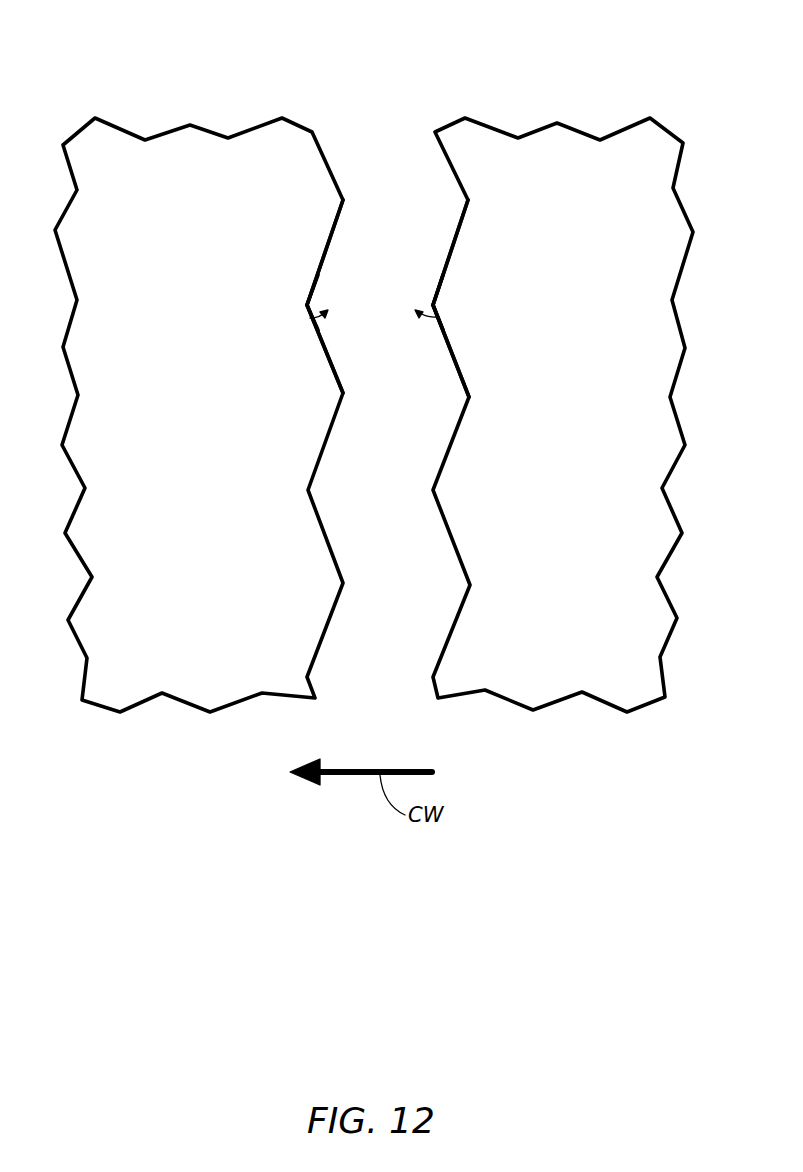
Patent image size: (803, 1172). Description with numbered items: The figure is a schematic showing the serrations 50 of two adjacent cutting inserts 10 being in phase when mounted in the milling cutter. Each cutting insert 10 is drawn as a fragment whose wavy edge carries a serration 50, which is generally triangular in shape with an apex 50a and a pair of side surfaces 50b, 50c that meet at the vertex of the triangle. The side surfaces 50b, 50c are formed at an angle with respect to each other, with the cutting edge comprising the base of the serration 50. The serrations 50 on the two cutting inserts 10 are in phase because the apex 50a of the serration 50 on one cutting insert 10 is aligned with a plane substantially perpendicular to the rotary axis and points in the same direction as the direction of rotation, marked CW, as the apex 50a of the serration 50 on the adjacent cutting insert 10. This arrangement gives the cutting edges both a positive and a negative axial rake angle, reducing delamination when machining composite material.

The cutting insert 10 is at (148, 73).
The serration 50 is at (310, 318).
The apex 50a is at (307, 305).
The side surface 50b is at (327, 252).
The side surface 50c is at (317, 338).